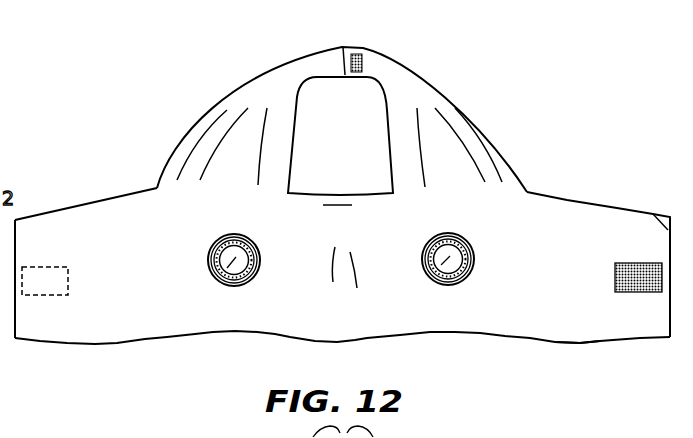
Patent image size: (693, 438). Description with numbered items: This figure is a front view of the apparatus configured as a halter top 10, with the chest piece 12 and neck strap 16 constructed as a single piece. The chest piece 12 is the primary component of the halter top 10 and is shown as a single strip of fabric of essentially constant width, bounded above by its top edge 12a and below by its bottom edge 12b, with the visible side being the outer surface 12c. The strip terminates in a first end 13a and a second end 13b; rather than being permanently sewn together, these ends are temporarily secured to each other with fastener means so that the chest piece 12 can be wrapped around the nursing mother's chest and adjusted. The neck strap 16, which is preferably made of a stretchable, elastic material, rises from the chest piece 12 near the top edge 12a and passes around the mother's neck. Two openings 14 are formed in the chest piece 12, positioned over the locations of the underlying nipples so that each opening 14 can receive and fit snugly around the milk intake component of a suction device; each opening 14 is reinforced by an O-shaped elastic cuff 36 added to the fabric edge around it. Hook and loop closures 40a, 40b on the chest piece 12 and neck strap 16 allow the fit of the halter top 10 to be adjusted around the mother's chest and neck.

The halter top 10 is at (338, 226).
The chest piece 12 is at (571, 189).
The top edge 12a is at (350, 195).
The bottom edge 12b is at (295, 337).
The outer surface 12c is at (542, 327).
The first end 13a is at (667, 227).
The second end 13b is at (15, 325).
The opening 14 is at (218, 277).
The neck strap 16 is at (420, 73).
The cuff 36 is at (233, 287).
The hook fastener closure 40a is at (643, 292).
The loop fastener closure 40b is at (50, 282).